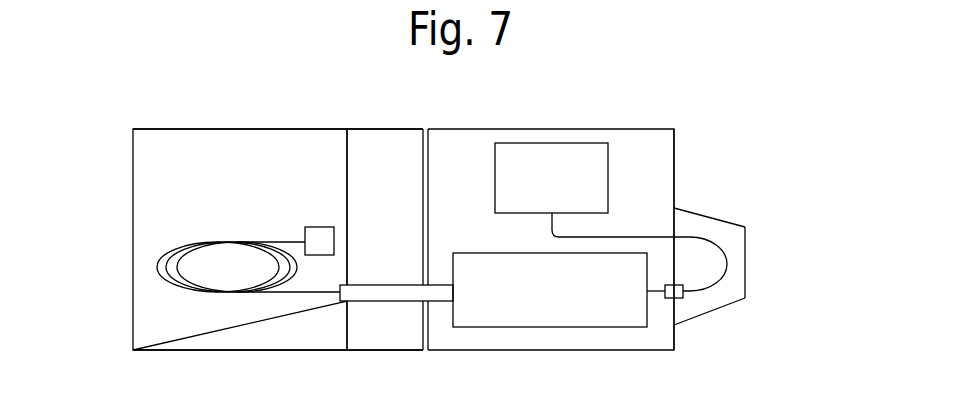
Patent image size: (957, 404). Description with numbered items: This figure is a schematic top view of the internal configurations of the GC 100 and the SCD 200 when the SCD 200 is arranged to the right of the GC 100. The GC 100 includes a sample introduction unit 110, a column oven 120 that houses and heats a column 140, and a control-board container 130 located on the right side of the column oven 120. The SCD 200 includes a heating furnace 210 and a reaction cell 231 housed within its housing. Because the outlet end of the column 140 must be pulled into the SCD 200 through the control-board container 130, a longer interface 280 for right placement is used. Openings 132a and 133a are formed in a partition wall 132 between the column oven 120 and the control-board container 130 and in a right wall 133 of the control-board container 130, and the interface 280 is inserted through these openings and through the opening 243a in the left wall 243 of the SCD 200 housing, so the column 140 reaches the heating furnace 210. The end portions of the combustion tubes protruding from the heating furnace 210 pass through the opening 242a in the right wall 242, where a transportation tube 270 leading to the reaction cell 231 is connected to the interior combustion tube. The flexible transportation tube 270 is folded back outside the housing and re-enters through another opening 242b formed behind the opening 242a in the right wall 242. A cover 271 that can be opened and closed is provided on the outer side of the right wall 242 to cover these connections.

The GC 100 is at (118, 187).
The sample introduction unit 110 is at (313, 227).
The column oven 120 is at (235, 142).
The control-board container 130 is at (372, 140).
The partition wall 132 is at (345, 142).
The opening 132a is at (343, 305).
The right wall 133 is at (422, 142).
The opening 133a is at (417, 305).
The column 140 is at (220, 240).
The SCD 200 is at (725, 122).
The heating furnace 210 is at (590, 330).
The reaction cell 231 is at (557, 143).
The right wall 242 is at (677, 173).
The opening 242a is at (677, 303).
The another opening 242b is at (675, 233).
The left wall 243 is at (430, 142).
The opening 243a is at (430, 305).
The transportation tube 270 is at (727, 273).
The cover 271 is at (747, 246).
The interface for right placement 280 is at (377, 283).